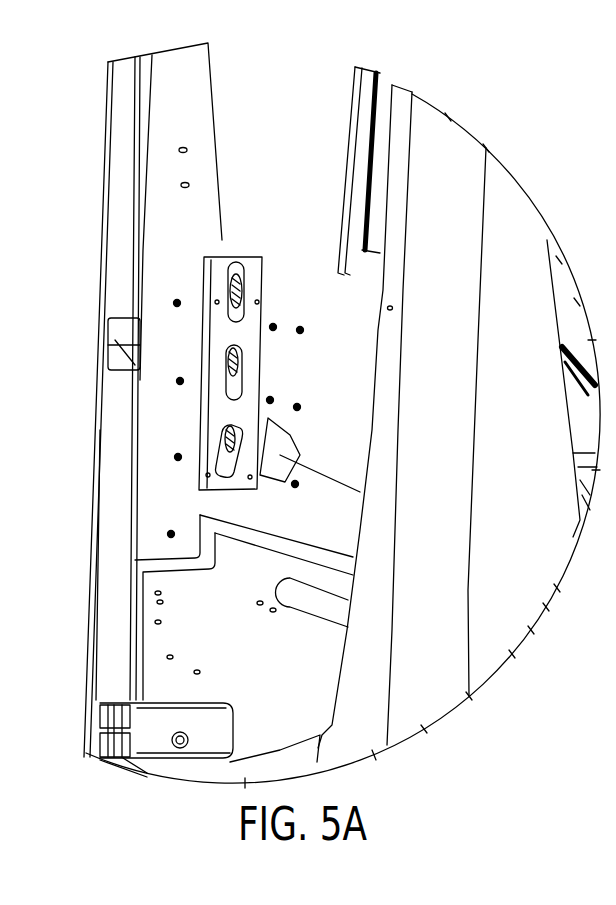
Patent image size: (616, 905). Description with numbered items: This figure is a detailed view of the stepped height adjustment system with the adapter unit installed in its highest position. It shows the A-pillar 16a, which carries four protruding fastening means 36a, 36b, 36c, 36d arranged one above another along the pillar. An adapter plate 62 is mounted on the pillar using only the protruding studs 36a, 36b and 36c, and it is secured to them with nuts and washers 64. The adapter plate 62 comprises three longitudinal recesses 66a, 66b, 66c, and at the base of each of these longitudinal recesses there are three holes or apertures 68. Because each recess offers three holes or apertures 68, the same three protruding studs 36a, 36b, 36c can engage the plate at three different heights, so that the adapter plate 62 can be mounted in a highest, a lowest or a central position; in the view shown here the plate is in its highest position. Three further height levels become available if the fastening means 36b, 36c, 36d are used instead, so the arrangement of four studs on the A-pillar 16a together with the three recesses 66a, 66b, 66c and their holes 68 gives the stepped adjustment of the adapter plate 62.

The A-pillar 16a is at (183, 214).
The adapter plate 62 is at (263, 258).
The holes or apertures 68 is at (228, 296).
The longitudinal recess 66a is at (252, 287).
The longitudinal recess 66b is at (243, 371).
The longitudinal recess 66c is at (243, 440).
The nuts and washers 64 is at (375, 324).
The protruding fastening means 36a is at (175, 303).
The protruding fastening means 36b is at (178, 381).
The protruding fastening means 36c is at (176, 457).
The protruding fastening means 36d is at (168, 533).